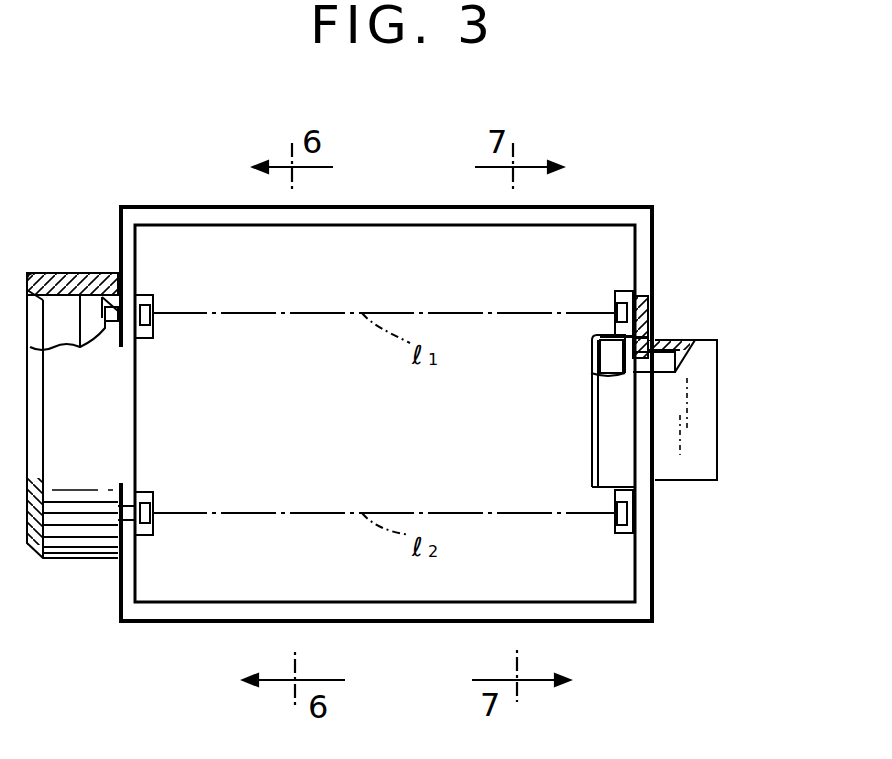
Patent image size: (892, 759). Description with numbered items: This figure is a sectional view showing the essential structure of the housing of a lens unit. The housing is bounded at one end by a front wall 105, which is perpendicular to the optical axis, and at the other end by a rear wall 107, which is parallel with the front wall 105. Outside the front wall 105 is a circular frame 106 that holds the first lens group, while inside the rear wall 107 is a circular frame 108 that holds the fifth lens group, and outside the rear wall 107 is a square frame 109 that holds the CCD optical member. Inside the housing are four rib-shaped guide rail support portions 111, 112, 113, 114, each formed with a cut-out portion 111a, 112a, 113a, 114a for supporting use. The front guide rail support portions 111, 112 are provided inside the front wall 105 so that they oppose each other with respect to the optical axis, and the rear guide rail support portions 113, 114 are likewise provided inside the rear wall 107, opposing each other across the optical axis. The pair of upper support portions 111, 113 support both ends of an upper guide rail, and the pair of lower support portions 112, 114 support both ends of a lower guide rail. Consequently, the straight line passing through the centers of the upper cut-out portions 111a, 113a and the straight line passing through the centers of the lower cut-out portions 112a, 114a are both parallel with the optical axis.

The front wall 105 is at (128, 597).
The circular frame 106 is at (68, 538).
The rear wall 107 is at (645, 240).
The circular frame 108 is at (598, 406).
The square frame 109 is at (660, 343).
The guide rail support portion 111 is at (148, 296).
The cut-out portion 111a is at (148, 338).
The guide rail support portion 112 is at (150, 536).
The cut-out portion 112a is at (150, 493).
The guide rail support portion 113 is at (614, 291).
The cut-out portion 113a is at (616, 318).
The guide rail support portion 114 is at (616, 526).
The cut-out portion 114a is at (615, 503).